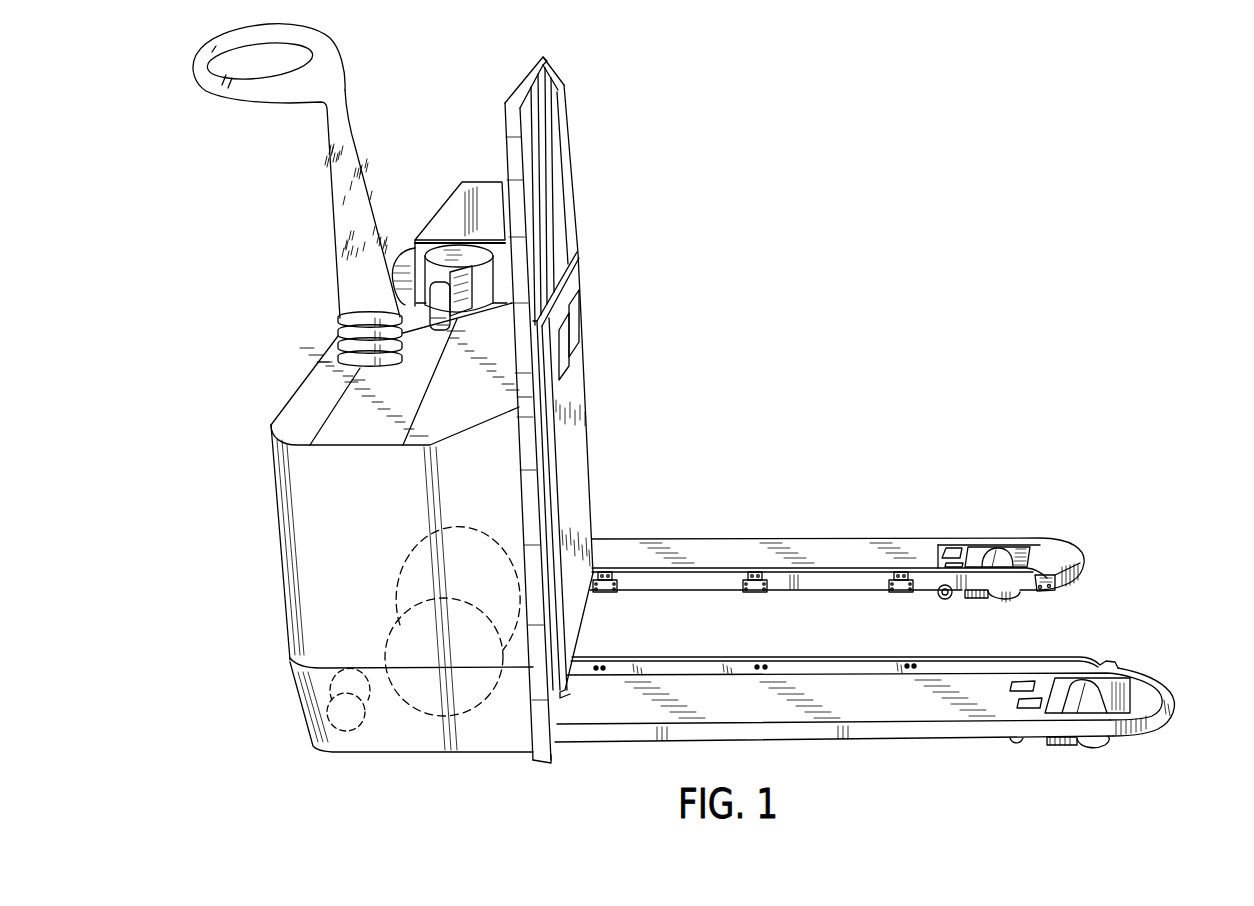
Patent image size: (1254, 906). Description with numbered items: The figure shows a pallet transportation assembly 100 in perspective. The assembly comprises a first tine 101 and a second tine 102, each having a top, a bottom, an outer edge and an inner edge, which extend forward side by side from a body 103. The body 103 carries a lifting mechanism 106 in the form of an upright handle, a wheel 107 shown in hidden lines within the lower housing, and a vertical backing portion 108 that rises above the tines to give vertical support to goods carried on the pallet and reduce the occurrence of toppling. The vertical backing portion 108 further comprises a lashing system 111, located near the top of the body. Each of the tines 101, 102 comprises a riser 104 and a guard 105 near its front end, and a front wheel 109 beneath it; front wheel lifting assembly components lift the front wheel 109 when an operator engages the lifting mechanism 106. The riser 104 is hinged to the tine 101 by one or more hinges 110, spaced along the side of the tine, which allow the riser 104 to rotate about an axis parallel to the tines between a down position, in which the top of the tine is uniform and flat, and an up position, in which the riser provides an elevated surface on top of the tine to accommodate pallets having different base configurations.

The pallet transportation assembly 100 is at (852, 208).
The first tine 101 is at (1072, 555).
The second tine 102 is at (1165, 693).
The body 103 is at (253, 593).
The riser 104 is at (939, 568).
The guard 105 is at (1042, 570).
The lifting mechanism 106 is at (312, 112).
The wheel 107 is at (432, 712).
The vertical backing portion 108 is at (572, 287).
The front wheel 109 is at (1008, 601).
The hinges 110 is at (606, 591).
The lashing system 111 is at (438, 212).